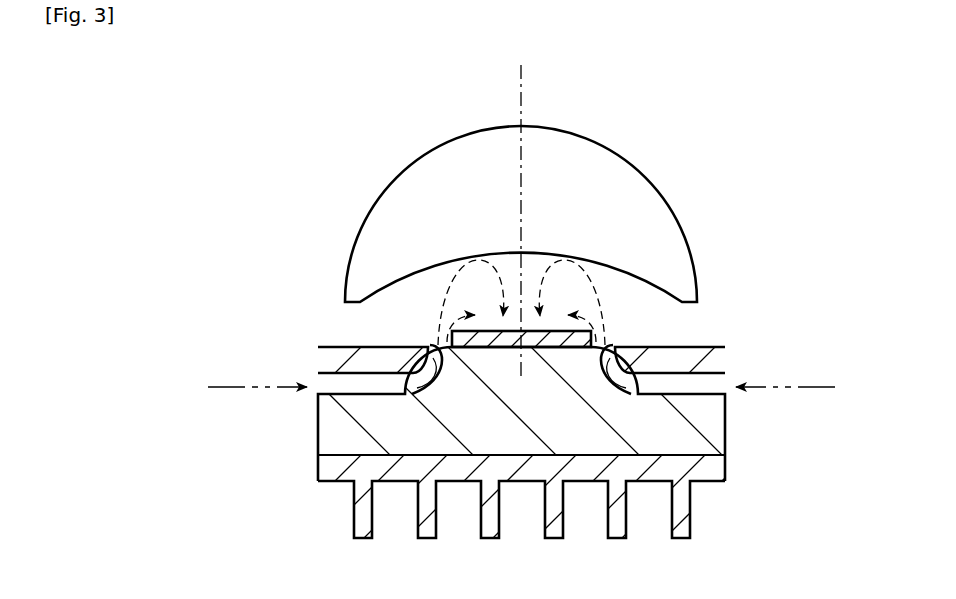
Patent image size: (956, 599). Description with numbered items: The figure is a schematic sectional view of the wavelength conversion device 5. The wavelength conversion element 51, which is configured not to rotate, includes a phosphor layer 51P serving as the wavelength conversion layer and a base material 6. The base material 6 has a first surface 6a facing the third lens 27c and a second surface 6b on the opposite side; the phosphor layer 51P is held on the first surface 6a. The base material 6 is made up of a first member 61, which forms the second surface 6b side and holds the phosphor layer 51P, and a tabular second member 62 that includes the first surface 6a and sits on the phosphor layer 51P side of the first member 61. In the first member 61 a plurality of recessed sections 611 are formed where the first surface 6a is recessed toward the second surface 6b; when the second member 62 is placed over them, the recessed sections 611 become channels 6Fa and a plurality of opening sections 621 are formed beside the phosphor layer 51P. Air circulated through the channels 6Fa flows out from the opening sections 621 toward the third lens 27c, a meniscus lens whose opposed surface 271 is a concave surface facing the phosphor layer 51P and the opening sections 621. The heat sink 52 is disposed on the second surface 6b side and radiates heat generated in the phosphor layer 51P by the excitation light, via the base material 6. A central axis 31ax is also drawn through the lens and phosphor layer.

The wavelength conversion device 5 is at (726, 158).
The optical axis 31ax is at (521, 83).
The third lens 27c is at (665, 220).
The opposed surface 271 is at (434, 264).
The wavelength conversion element 51 is at (282, 425).
The phosphor layer 51P is at (554, 348).
The heat sink 52 is at (330, 467).
The base material 6 is at (528, 380).
The first member 61 is at (708, 438).
The second member 62 is at (668, 368).
The opening sections 621 is at (431, 345).
The first surface 6a is at (318, 347).
The channels 6Fa is at (350, 381).
The second surface 6b is at (466, 456).
The recessed sections 611 is at (657, 464).